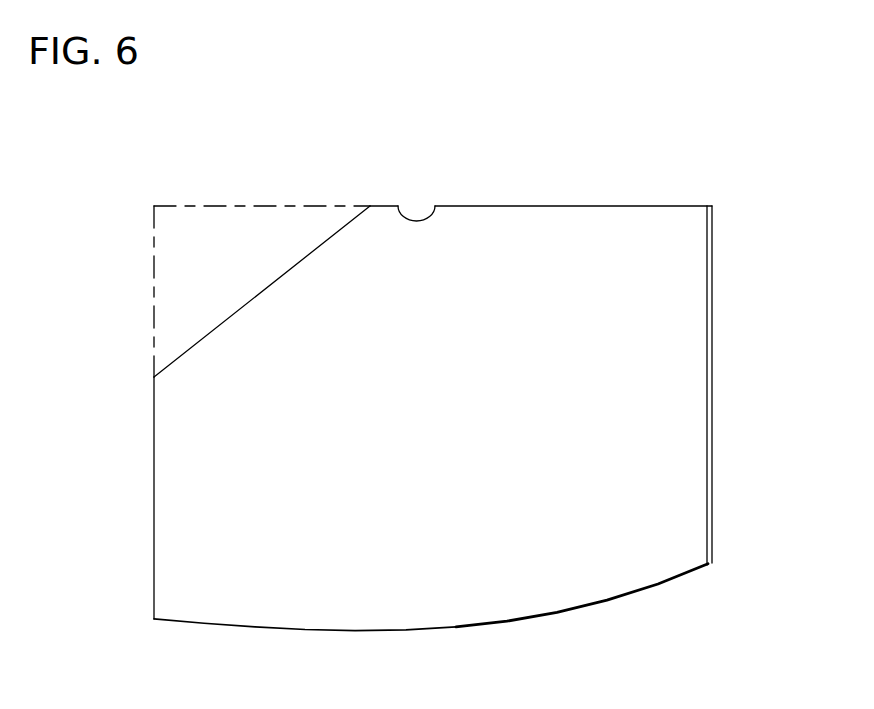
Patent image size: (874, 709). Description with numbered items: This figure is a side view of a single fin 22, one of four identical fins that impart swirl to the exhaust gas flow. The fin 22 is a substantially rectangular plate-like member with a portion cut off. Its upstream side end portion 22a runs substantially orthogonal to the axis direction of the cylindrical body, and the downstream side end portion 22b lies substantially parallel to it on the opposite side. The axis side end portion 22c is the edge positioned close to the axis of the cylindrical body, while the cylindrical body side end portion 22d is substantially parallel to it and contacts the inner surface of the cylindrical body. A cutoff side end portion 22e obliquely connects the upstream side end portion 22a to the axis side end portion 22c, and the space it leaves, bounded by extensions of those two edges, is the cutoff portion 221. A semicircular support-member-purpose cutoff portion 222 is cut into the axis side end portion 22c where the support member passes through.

The fin 22 is at (728, 188).
The cutoff portion 221 is at (210, 202).
The support-member-purpose cutoff portion 222 is at (413, 218).
The upstream side end portion 22a is at (153, 495).
The downstream side end portion 22b is at (712, 372).
The axis side end portion 22c is at (542, 205).
The cylindrical body side end portion 22d is at (433, 632).
The cutoff side end portion 22e is at (265, 287).